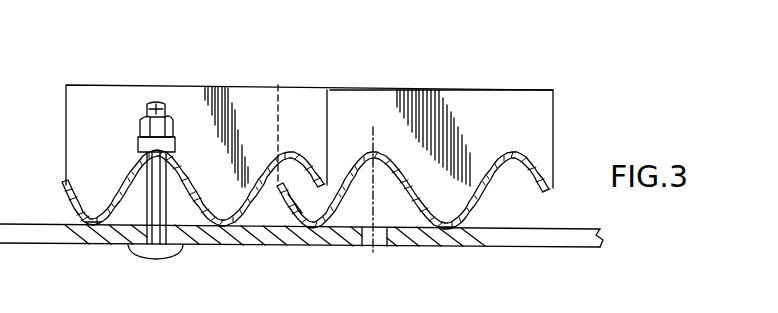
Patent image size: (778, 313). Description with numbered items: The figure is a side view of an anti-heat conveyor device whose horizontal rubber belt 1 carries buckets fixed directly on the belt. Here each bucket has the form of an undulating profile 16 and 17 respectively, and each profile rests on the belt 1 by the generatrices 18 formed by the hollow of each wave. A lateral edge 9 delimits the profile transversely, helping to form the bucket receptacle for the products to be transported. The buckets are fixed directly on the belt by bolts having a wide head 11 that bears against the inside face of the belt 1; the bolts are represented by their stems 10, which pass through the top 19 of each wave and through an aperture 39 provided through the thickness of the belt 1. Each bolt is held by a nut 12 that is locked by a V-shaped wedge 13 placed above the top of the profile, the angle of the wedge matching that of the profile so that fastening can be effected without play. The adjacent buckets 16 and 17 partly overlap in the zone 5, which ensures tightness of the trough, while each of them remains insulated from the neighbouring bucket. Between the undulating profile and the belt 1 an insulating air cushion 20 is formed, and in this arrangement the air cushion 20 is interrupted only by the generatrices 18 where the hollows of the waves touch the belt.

The belt 1 is at (572, 229).
The overlap zone 5 is at (302, 198).
The lateral edge 9 is at (537, 133).
The bolt stem 10 is at (167, 190).
The wide head 11 is at (150, 258).
The nut 12 is at (173, 122).
The V-shaped wedge 13 is at (139, 148).
The undulating profile 16 is at (118, 186).
The undulating profile 17 is at (547, 68).
The generatrices 18 is at (96, 226).
The top of wave 19 is at (385, 158).
The insulating air cushion 20 is at (532, 220).
The aperture 39 is at (380, 240).